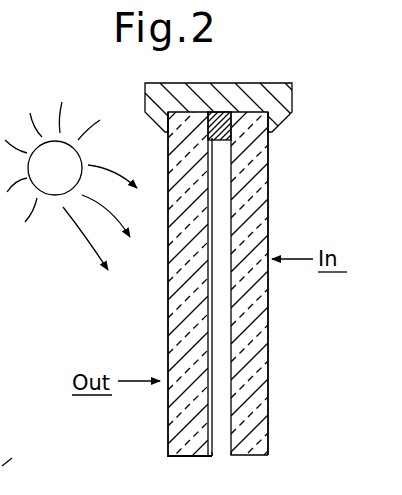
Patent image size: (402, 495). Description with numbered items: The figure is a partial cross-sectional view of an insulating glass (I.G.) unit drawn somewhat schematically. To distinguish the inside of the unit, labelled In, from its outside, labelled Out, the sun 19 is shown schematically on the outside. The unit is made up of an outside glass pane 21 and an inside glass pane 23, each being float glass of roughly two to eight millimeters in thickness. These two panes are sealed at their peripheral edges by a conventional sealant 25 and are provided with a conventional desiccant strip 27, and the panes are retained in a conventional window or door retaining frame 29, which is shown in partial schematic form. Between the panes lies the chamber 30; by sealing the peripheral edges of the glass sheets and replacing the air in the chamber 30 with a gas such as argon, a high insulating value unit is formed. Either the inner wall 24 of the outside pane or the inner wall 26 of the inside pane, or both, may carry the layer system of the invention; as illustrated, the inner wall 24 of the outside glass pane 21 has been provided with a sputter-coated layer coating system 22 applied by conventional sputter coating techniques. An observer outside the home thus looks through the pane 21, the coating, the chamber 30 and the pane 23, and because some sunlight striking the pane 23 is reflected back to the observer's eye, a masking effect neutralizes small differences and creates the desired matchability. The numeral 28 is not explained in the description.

The sun 19 is at (44, 177).
The outside glass pane 21 is at (168, 421).
The sputter-coated layer coating system 22 is at (212, 433).
The inside glass pane 23 is at (270, 403).
The inner wall 24 is at (203, 330).
The sealant 25 is at (222, 121).
The inner wall 26 is at (233, 331).
The desiccant strip 27 is at (268, 176).
The ambient region 28 is at (21, 455).
The retaining frame 29 is at (221, 83).
The chamber 30 is at (222, 452).